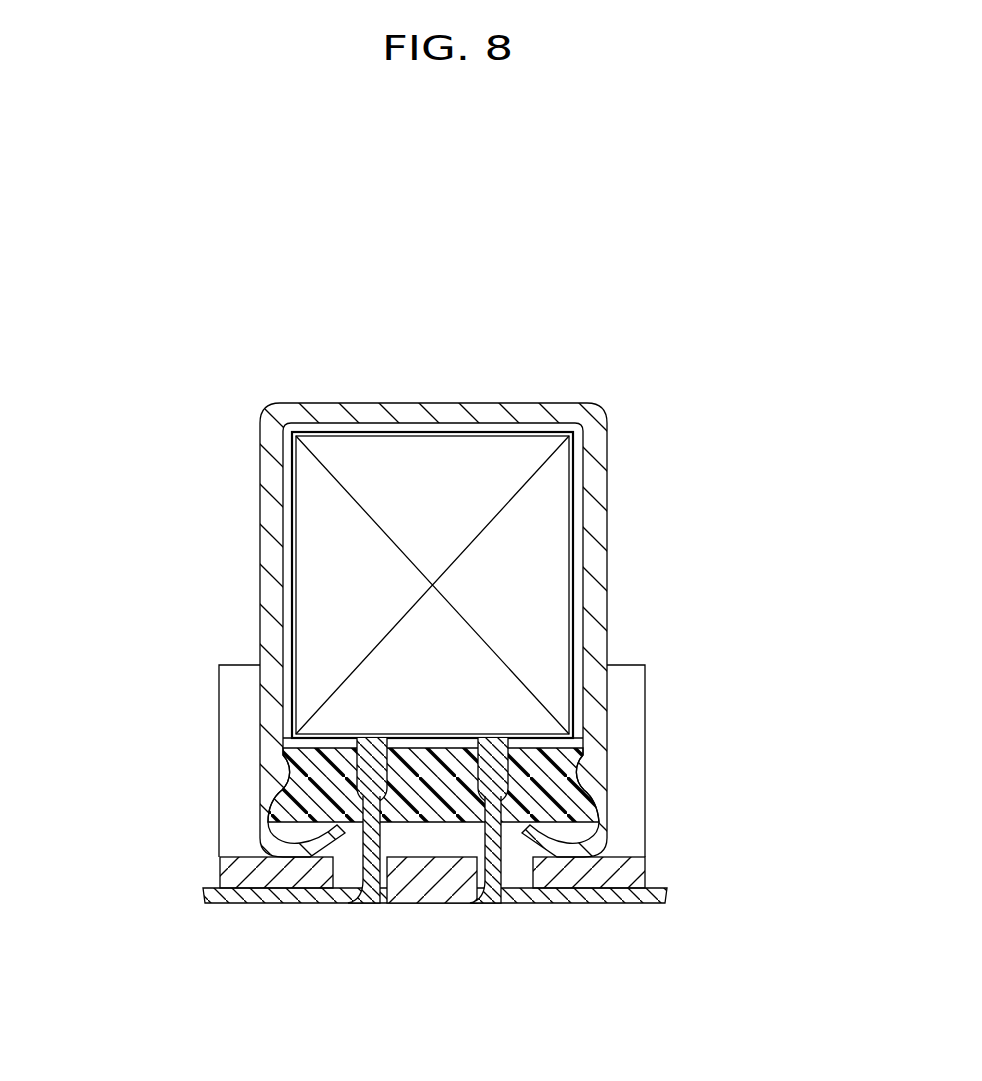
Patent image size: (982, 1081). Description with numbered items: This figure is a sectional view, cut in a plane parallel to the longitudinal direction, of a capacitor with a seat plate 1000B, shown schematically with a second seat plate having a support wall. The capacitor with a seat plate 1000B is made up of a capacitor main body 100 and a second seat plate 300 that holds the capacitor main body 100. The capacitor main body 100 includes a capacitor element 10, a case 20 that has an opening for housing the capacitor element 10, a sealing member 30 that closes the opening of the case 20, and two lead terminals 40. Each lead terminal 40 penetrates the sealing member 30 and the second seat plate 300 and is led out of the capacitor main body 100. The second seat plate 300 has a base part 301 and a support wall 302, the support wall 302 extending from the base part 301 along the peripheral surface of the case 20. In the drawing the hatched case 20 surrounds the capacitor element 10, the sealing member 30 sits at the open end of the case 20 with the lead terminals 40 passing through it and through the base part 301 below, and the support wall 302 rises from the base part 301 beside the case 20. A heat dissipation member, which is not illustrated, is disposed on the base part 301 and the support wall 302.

The capacitor element 10 is at (490, 585).
The case 20 is at (605, 413).
The sealing member 30 is at (560, 775).
The lead terminal 40 is at (350, 903).
The capacitor main body 100 is at (541, 653).
The second seat plate 300 is at (346, 776).
The base part 301 is at (237, 875).
The support wall 302 is at (233, 772).
The capacitor with a seat plate 1000B is at (462, 268).